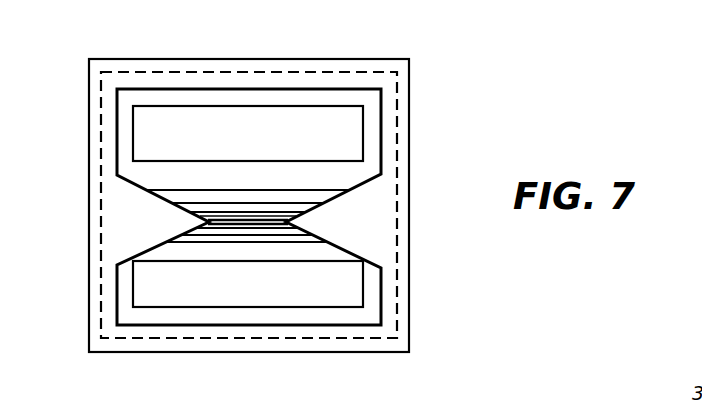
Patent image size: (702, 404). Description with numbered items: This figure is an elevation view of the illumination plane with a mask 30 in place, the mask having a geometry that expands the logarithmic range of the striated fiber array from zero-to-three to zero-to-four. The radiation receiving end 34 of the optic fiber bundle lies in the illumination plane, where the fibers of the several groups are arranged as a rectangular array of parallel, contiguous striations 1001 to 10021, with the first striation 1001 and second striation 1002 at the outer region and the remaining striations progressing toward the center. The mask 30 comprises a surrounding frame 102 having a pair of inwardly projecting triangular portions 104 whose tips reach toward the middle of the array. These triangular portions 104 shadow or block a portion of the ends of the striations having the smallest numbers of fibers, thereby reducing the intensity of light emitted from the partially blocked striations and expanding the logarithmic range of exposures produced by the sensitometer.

The mask 30 is at (407, 60).
The radiation receiving end 34 is at (248, 70).
The surrounding frame 102 is at (198, 347).
The striation 1001 is at (353, 123).
The striation 1002 is at (353, 293).
The striation 10021 is at (277, 223).
The triangular portions 104 is at (180, 220).